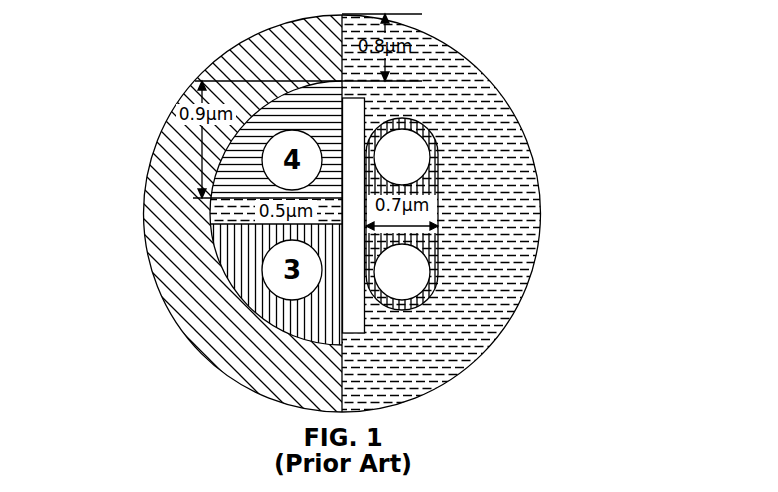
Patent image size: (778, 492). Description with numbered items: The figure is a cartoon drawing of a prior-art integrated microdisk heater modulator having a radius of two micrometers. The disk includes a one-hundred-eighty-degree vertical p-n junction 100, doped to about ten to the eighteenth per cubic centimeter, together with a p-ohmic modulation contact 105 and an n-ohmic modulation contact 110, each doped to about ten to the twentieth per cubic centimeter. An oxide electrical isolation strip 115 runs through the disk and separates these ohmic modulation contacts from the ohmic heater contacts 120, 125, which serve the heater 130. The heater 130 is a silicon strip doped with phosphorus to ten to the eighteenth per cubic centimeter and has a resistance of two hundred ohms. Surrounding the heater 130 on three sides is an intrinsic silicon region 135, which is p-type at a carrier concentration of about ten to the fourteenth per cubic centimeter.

The vertical p-n junction 100 is at (180, 100).
The p-ohmic modulation contact 105 is at (243, 95).
The n-ohmic modulation contact 110 is at (210, 247).
The oxide electrical isolation strip 115 is at (352, 333).
The ohmic heater contact 120 is at (412, 120).
The ohmic heater contact 125 is at (418, 310).
The heater 130 is at (436, 238).
The intrinsic silicon region 135 is at (532, 158).